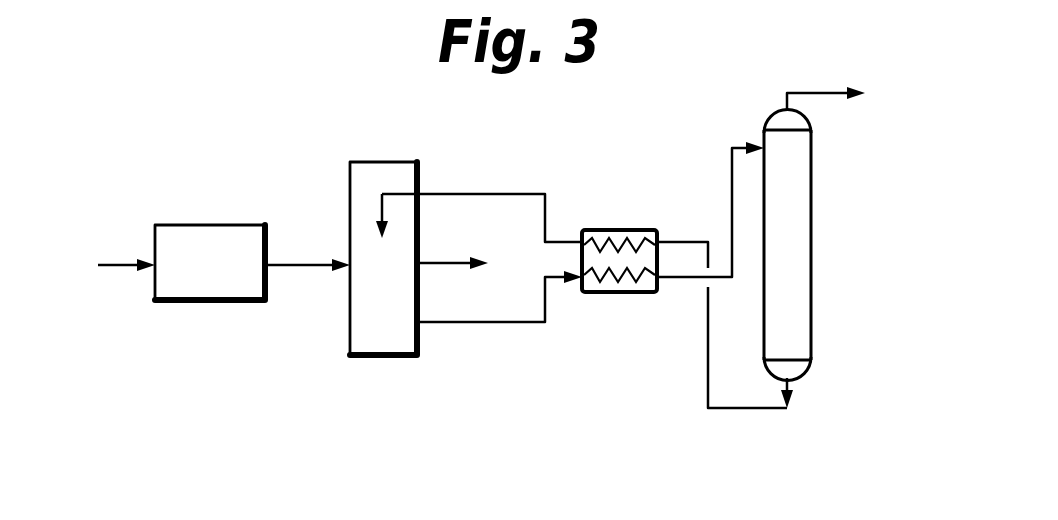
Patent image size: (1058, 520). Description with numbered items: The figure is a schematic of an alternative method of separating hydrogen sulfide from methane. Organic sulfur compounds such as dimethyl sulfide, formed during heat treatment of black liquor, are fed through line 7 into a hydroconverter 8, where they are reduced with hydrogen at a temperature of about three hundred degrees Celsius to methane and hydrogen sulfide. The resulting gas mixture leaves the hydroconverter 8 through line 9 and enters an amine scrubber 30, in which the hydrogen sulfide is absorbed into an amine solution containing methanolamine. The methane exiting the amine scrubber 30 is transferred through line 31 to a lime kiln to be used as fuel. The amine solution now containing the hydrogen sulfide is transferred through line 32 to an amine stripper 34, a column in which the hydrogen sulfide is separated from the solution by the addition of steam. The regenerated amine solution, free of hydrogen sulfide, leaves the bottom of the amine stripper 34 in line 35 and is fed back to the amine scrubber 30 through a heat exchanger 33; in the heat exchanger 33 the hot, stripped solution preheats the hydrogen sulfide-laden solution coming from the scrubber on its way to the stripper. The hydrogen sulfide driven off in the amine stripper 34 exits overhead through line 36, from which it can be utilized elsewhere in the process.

The line 7 is at (112, 264).
The hydroconverter 8 is at (242, 225).
The line 9 is at (288, 263).
The amine scrubber 30 is at (385, 162).
The line 31 is at (445, 262).
The line 32 is at (468, 323).
The heat exchanger 33 is at (621, 229).
The amine stripper 34 is at (812, 245).
The line 35 is at (733, 409).
The line 36 is at (823, 93).